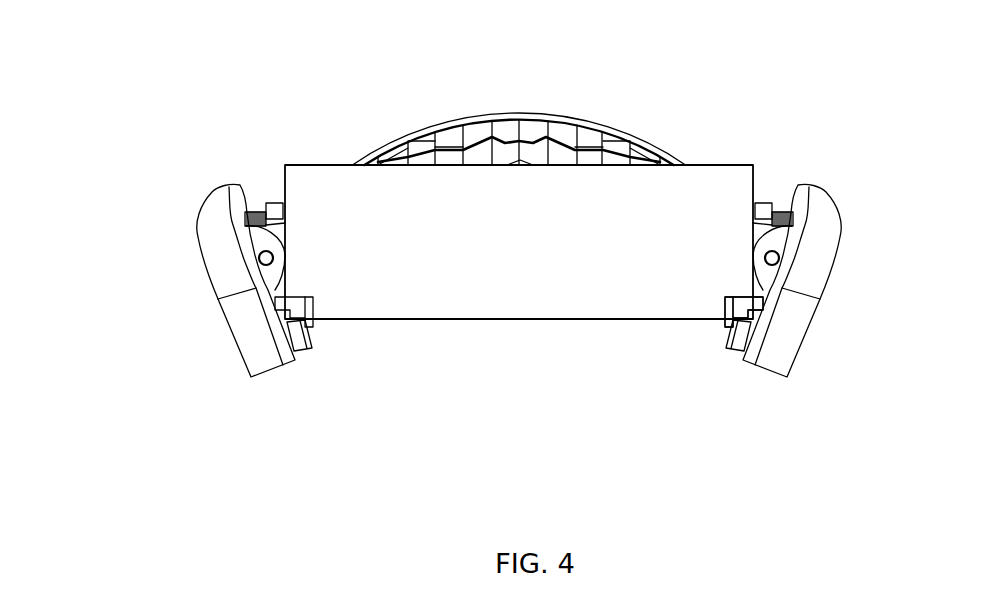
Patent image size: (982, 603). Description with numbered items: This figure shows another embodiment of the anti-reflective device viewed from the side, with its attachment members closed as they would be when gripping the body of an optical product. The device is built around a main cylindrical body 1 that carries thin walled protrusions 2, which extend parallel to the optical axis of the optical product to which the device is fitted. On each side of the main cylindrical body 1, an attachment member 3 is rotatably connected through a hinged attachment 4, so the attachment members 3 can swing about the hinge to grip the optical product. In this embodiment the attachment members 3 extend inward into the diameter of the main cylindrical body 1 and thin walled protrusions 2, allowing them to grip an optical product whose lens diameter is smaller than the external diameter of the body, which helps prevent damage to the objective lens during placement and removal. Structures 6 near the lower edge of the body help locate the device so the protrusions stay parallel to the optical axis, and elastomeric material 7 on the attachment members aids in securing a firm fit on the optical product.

The main cylindrical body 1 is at (738, 181).
The thin walled protrusions 2 is at (607, 124).
The attachment members 3 is at (233, 313).
The hinged attachment 4 is at (267, 212).
The structures 6 is at (735, 308).
The elastomeric material 7 is at (312, 345).